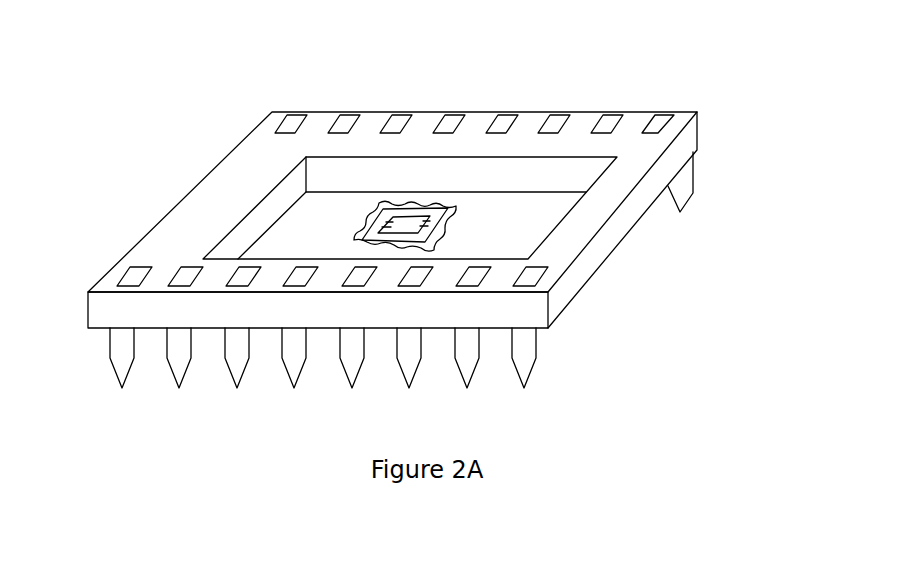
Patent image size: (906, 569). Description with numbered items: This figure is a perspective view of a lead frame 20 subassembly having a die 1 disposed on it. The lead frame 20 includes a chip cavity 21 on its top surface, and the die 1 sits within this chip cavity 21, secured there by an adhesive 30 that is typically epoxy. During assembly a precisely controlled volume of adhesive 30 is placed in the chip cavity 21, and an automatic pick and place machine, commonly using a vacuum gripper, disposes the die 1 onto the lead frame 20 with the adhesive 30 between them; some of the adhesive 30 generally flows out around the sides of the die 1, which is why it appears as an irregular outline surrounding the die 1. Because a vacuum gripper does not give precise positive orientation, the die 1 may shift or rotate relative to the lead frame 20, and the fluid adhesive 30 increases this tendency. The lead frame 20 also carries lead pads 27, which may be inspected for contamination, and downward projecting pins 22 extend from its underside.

The die 1 is at (412, 225).
The lead frame 20 is at (607, 197).
The chip cavity 21 is at (547, 213).
The pins 22 is at (525, 357).
The lead pads 27 is at (135, 271).
The adhesive 30 is at (452, 233).